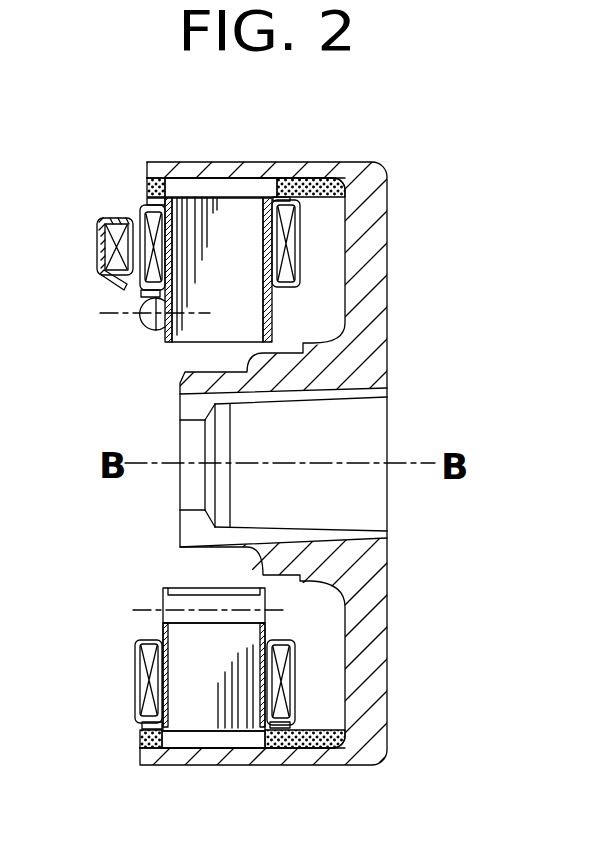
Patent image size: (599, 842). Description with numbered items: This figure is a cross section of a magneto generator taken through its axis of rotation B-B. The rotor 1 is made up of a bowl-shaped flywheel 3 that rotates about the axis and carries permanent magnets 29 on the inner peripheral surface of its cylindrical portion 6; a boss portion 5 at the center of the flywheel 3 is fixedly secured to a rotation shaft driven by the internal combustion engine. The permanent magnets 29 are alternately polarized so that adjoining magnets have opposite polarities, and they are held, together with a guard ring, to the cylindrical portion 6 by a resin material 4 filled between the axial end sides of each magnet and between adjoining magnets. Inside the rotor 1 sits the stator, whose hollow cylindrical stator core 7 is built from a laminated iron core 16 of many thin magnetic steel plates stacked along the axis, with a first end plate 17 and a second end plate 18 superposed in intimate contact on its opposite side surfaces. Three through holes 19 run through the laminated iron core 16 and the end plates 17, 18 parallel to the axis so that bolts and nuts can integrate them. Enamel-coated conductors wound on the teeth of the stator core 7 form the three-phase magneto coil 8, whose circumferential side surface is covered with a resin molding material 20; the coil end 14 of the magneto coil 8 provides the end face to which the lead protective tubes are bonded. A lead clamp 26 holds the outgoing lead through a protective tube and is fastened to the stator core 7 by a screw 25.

The rotor 1 is at (403, 307).
The flywheel 3 is at (373, 230).
The resin material 4 is at (340, 172).
The boss portion 5 is at (298, 380).
The cylindrical portion 6 is at (208, 172).
The stator core 7 is at (192, 330).
The magneto coil 8 is at (142, 677).
The coil end 14 is at (135, 665).
The laminated iron core 16 is at (190, 640).
The first end plate 17 is at (140, 725).
The second end plate 18 is at (310, 183).
The through holes 19 is at (190, 600).
The resin molding material 20 is at (142, 208).
The screw 25 is at (148, 321).
The lead clamp 26 is at (97, 243).
The permanent magnets 29 is at (187, 185).